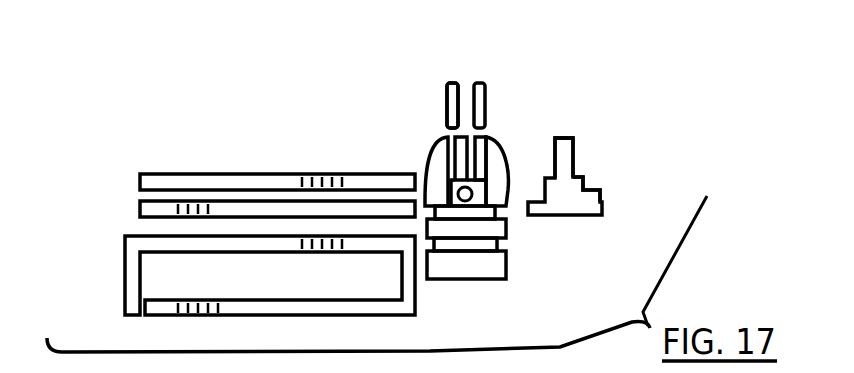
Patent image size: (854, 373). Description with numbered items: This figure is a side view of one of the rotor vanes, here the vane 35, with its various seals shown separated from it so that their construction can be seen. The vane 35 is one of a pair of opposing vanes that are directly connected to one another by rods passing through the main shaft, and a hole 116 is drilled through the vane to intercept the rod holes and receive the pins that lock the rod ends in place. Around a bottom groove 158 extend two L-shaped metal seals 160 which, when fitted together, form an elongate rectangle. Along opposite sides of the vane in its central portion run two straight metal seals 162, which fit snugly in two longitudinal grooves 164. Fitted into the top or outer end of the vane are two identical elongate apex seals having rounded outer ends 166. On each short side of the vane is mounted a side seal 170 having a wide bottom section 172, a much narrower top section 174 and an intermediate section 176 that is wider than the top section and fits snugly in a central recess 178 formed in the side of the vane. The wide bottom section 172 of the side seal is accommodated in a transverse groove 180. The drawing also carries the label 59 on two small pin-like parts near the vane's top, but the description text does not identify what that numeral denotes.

The vane 35 is at (484, 180).
The pins 59 is at (447, 100).
The hole 116 is at (469, 199).
The bottom groove 158 is at (502, 247).
The L-shaped metal seals 160 is at (176, 317).
The straight metal seals 162 is at (140, 182).
The longitudinal grooves 164 is at (436, 212).
The rounded outer ends 166 is at (453, 83).
The side seals 170 is at (583, 190).
The wide bottom section 172 is at (603, 209).
The top section 174 is at (570, 137).
The intermediate section 176 is at (580, 163).
The central recess 178 is at (489, 187).
The transverse groove 180 is at (503, 180).